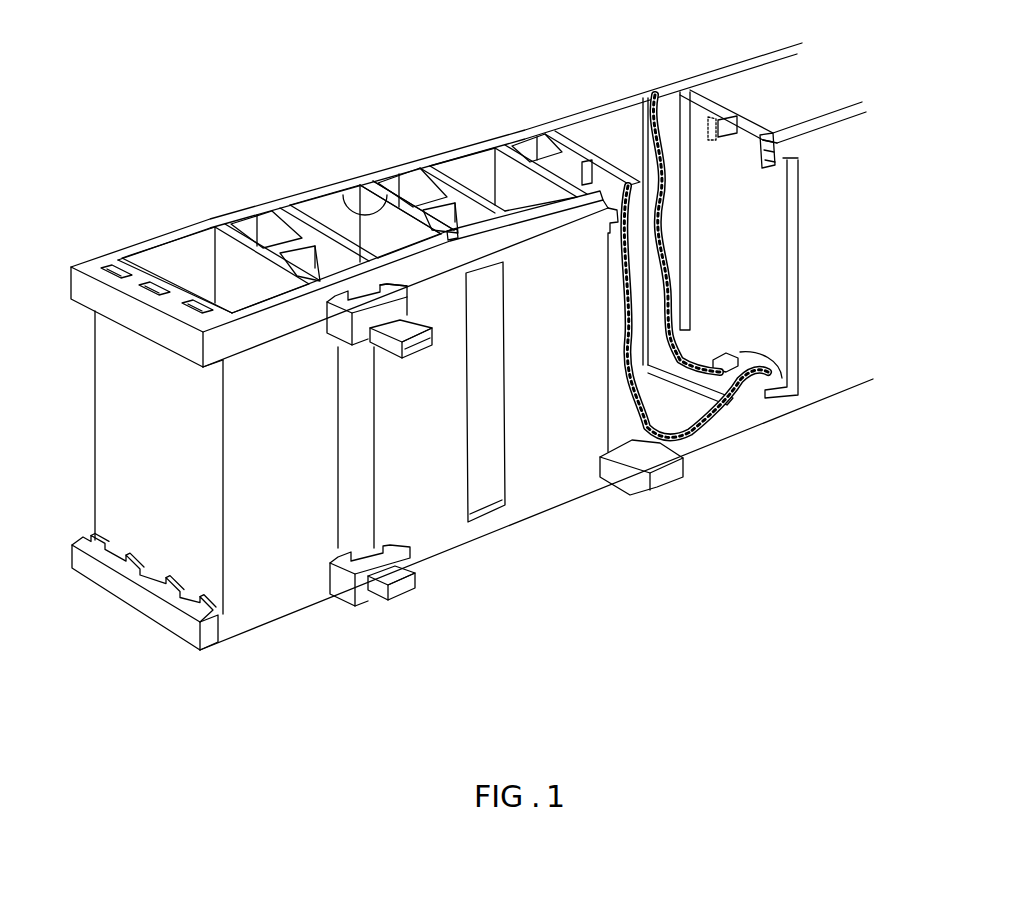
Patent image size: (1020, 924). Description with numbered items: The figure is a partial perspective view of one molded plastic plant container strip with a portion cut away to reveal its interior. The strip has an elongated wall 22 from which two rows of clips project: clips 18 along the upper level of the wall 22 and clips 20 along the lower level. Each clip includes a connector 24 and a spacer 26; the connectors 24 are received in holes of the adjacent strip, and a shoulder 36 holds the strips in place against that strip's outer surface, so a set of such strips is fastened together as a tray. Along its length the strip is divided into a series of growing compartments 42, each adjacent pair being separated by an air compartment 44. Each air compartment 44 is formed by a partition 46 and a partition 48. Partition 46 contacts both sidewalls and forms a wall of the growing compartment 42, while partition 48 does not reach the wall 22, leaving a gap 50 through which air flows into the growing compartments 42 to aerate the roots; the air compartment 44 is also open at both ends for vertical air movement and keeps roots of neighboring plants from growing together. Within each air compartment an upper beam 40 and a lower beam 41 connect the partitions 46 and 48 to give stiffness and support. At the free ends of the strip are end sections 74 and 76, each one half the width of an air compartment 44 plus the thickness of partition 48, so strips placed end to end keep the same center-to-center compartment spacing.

The clips 18 is at (332, 325).
The clips 20 is at (348, 604).
The elongated wall 22 is at (550, 470).
The connectors 24 is at (412, 354).
The spacers 26 is at (397, 293).
The shoulder 36 is at (340, 364).
The upper beam 40 is at (706, 118).
The lower beam 41 is at (745, 352).
The growing compartments 42 is at (318, 222).
The air compartments 44 is at (388, 195).
The partition 46 is at (291, 215).
The partition 48 is at (352, 222).
The gap 50 is at (466, 222).
The end section 74 is at (84, 262).
The end section 76 is at (207, 652).